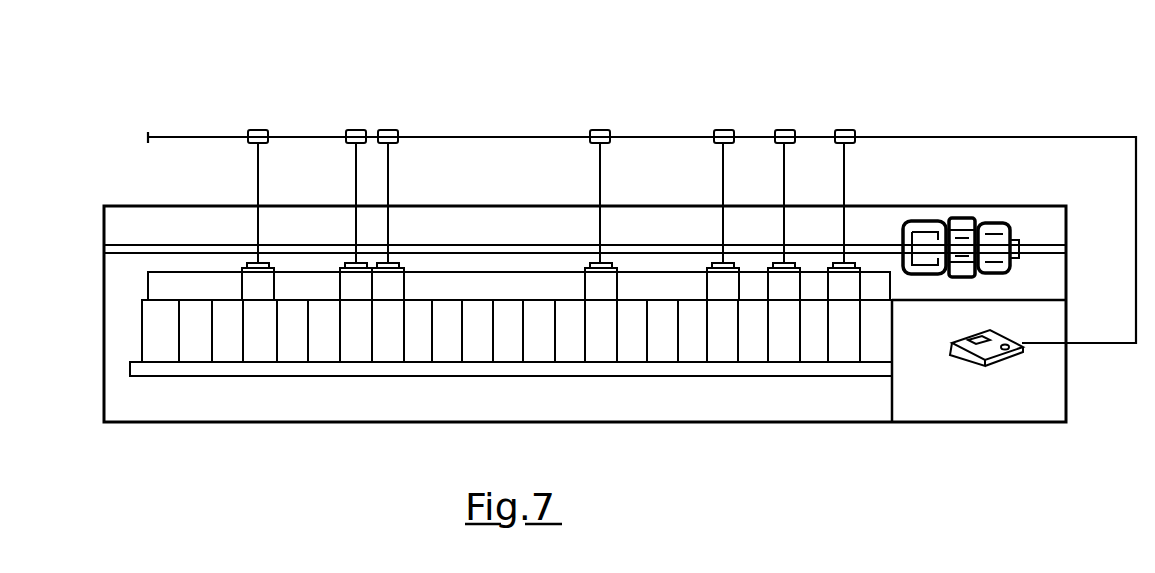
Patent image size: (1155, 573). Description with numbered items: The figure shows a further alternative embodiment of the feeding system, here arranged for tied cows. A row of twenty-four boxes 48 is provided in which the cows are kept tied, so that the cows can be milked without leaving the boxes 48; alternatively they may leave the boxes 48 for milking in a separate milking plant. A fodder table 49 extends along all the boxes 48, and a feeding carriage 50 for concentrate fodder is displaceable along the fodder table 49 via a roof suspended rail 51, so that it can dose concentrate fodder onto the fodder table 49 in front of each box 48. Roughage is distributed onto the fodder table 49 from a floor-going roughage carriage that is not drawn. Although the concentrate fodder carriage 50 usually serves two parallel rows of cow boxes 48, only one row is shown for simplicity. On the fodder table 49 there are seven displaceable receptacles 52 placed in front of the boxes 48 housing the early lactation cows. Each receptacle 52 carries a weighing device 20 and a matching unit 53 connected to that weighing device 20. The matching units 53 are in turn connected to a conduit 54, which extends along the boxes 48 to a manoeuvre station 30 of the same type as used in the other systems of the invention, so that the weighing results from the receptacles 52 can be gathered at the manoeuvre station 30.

The weighing device 20 is at (613, 270).
The manoeuvre station 30 is at (962, 362).
The boxes 48 is at (197, 345).
The fodder table 49 is at (480, 283).
The feeding carriage 50 is at (935, 225).
The roof suspended rail 51 is at (150, 241).
The displaceable receptacles 52 is at (348, 287).
The matching unit 53 is at (722, 128).
The conduit 54 is at (1069, 140).